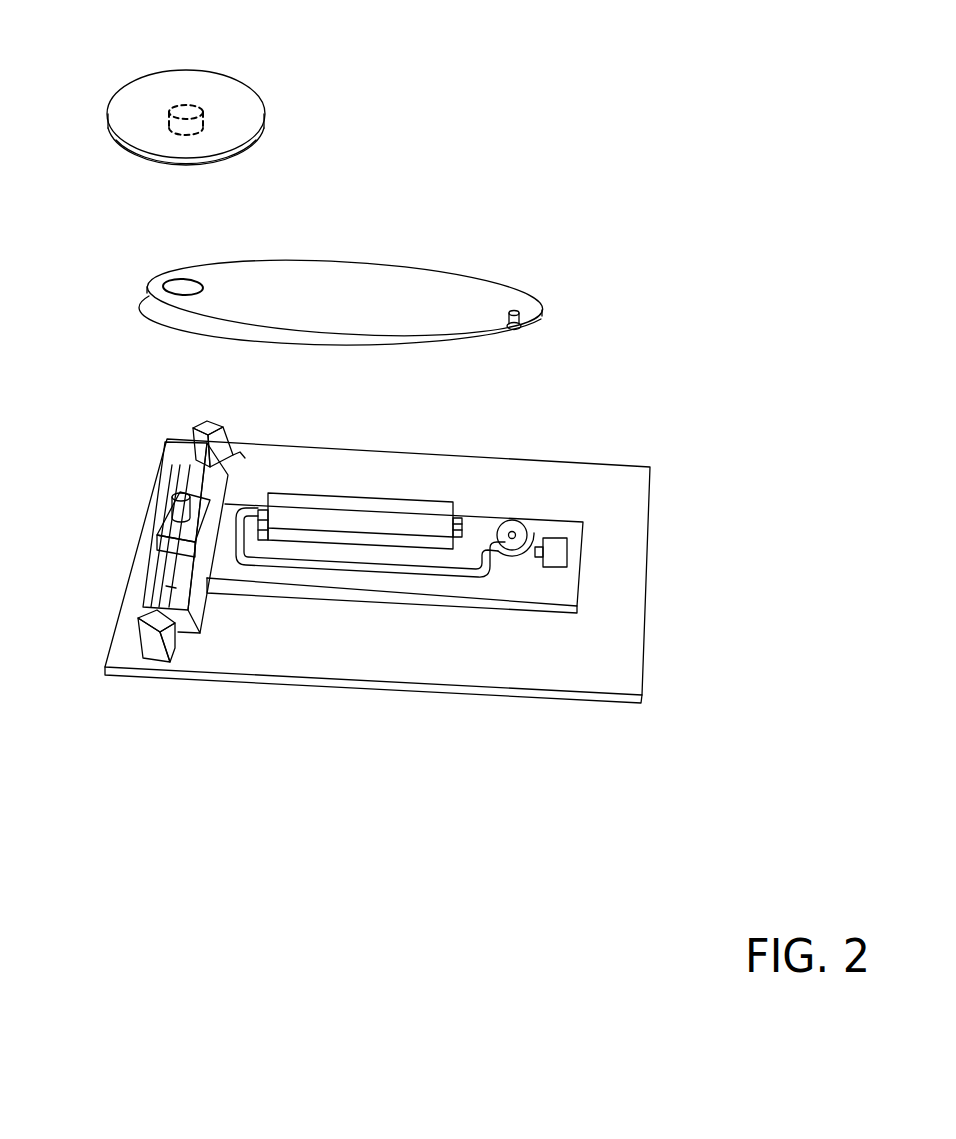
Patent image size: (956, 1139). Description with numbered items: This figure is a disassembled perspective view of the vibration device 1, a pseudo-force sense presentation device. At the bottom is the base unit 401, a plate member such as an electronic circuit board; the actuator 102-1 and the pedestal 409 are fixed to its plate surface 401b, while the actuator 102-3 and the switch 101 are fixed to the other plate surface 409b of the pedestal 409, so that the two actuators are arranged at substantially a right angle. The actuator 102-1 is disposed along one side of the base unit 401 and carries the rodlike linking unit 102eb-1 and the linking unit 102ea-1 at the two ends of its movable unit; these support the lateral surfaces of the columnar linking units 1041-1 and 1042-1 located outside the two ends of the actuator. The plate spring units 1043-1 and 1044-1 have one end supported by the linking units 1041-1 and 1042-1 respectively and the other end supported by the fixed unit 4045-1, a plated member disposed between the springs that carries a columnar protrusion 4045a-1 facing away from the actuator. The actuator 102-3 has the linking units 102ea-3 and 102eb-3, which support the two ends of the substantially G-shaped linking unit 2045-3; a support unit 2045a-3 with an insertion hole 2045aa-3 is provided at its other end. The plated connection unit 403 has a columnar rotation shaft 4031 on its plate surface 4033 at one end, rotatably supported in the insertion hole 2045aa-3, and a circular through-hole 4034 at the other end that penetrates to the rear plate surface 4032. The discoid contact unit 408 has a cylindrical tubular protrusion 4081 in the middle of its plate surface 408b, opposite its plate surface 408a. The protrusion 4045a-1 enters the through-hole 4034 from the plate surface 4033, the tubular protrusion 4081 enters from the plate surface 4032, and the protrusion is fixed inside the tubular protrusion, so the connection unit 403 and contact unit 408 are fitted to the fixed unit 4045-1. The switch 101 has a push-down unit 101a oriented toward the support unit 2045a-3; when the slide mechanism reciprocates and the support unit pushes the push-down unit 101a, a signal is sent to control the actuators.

The vibration device 1 is at (790, 5).
The contact unit 408 is at (268, 126).
The plate surface of contact unit 408a is at (235, 113).
The plate surface of contact unit 408b is at (197, 150).
The cylindrical tubular protrusion 4081 is at (178, 141).
The connection unit 403 is at (538, 297).
The plate surface of connection unit 4032 is at (363, 288).
The plate surface of connection unit 4033 is at (230, 293).
The through-hole 4034 is at (180, 288).
The rotation shaft 4031 is at (518, 330).
The base unit 401 is at (623, 700).
The plate surface of base unit 401b is at (600, 672).
The pedestal 409 is at (443, 598).
The plate surface of pedestal 409b is at (510, 612).
The actuator 102-3 is at (383, 520).
The linking unit 102ea-3 is at (263, 503).
The linking unit 102eb-3 is at (460, 518).
The linking unit 2045-3 is at (355, 558).
The support unit 2045a-3 is at (545, 530).
The insertion hole 2045aa-3 is at (515, 530).
The switch 101 is at (565, 543).
The push-down unit 101a is at (489, 585).
The actuator 102-1 is at (212, 619).
The plate spring unit 1044-1 is at (202, 594).
The plate spring unit 1043-1 is at (187, 467).
The linking unit 1041-1 is at (205, 428).
The linking unit 1042-1 is at (152, 648).
The fixed unit 4045-1 is at (167, 527).
The protrusion 4045a-1 is at (177, 495).
The linking unit 102eb-1 is at (253, 453).
The linking unit 102ea-1 is at (172, 588).